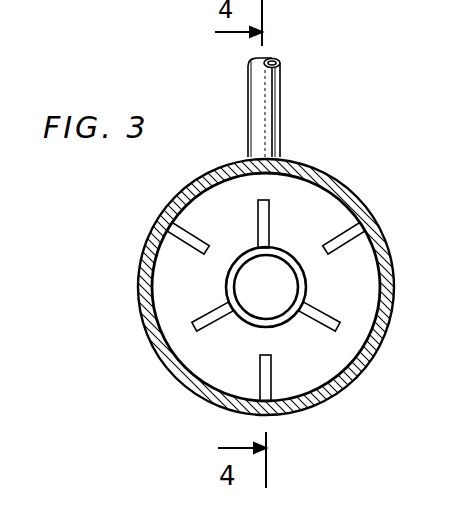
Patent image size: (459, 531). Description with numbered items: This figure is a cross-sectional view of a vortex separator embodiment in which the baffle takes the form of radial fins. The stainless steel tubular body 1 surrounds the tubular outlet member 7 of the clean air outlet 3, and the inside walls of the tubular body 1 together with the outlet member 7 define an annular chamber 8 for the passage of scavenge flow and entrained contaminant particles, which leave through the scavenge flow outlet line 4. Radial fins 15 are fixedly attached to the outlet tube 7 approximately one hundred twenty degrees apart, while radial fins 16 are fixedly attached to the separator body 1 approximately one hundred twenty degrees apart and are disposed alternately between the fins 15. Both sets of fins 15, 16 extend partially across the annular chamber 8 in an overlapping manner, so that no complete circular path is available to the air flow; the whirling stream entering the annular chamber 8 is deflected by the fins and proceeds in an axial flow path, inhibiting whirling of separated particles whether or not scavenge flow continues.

The tubular body 1 is at (338, 187).
The outlet 3 is at (282, 298).
The scavenge flow outlet line 4 is at (273, 104).
The tubular outlet member 7 is at (242, 247).
The annular chamber 8 is at (356, 298).
The radial fins 15 is at (207, 330).
The radial fins 16 is at (191, 248).